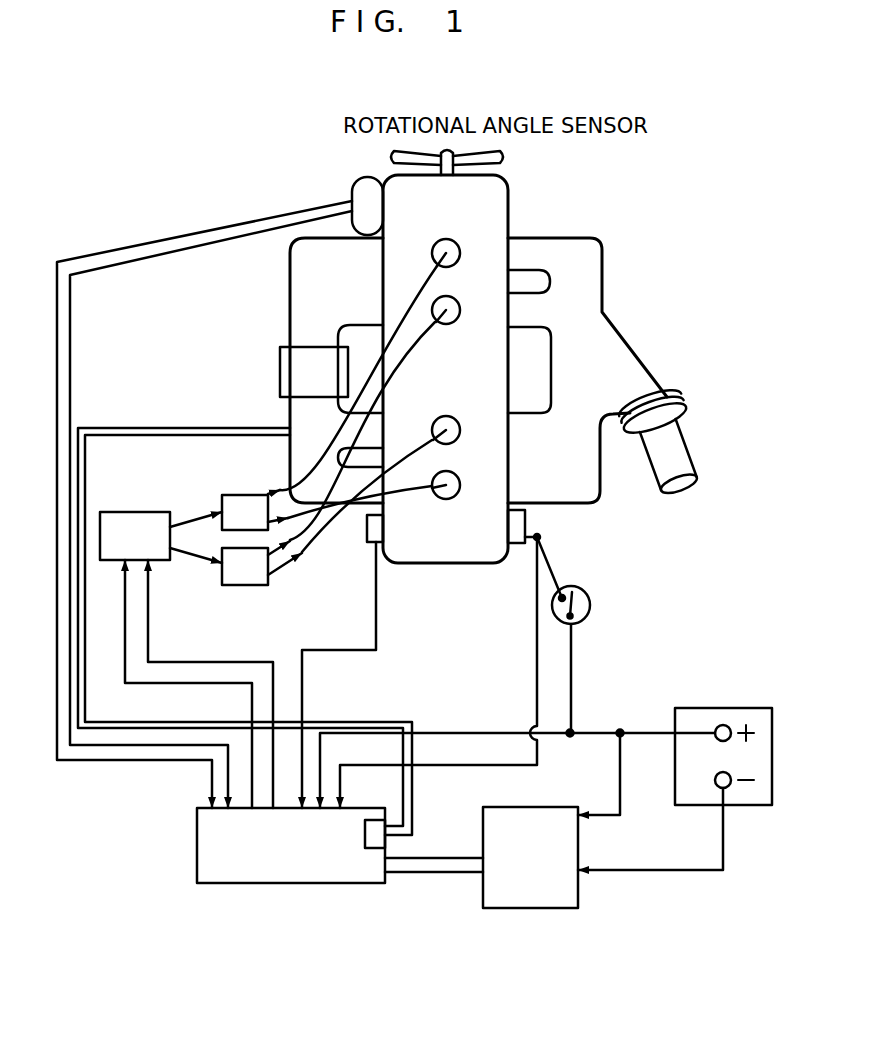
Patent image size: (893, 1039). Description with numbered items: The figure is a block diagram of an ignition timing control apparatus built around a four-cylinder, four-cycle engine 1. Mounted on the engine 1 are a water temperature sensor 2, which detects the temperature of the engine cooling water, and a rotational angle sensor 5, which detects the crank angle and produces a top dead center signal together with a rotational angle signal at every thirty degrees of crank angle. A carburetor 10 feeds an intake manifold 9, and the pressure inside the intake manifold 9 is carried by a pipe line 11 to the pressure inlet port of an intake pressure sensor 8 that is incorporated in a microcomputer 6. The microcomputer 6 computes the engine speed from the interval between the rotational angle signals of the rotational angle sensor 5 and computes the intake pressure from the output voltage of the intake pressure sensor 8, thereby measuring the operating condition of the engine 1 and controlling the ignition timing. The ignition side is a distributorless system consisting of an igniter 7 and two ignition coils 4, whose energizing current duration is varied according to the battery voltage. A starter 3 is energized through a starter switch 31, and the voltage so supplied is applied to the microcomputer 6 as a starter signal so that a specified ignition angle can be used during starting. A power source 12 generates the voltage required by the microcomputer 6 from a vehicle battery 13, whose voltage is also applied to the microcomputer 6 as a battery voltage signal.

The engine 1 is at (508, 192).
The water temperature sensor 2 is at (367, 530).
The starter 3 is at (528, 518).
The ignition coils 4 is at (243, 496).
The rotational angle sensor 5 is at (362, 178).
The microcomputer 6 is at (197, 833).
The igniter 7 is at (140, 512).
The intake pressure sensor 8 is at (380, 850).
The intake manifold 9 is at (290, 284).
The carburetor 10 is at (280, 368).
The pipe line 11 is at (152, 430).
The power source 12 is at (578, 848).
The battery 13 is at (700, 708).
The starter switch 31 is at (590, 606).